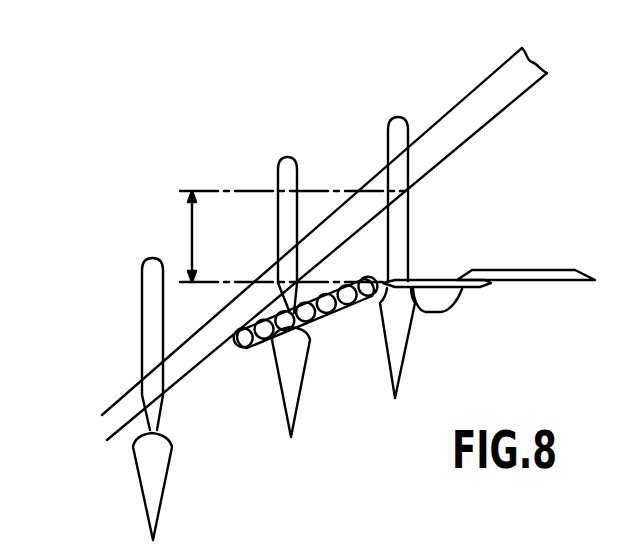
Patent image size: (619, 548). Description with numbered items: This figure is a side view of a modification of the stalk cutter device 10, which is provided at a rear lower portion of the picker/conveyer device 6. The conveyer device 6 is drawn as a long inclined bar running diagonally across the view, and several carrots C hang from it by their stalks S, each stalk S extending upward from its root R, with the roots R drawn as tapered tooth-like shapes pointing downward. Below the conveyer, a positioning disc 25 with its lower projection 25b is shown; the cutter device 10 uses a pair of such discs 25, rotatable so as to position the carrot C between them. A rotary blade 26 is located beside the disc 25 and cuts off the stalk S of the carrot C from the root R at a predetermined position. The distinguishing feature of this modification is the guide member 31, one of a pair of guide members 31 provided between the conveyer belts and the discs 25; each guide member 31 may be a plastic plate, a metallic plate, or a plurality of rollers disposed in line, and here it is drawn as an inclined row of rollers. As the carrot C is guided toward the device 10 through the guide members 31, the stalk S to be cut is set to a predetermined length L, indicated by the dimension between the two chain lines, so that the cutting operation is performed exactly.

The picker/conveyer device 6 is at (444, 127).
The stalk cutter device 10 is at (467, 233).
The positioning disc 25 is at (476, 289).
The lower projection 25b is at (442, 303).
The rotary blade 26 is at (547, 268).
The guide member 31 is at (256, 348).
The stalk S is at (145, 308).
The carrot C is at (137, 337).
The predetermined length L is at (292, 236).
The root R is at (166, 444).